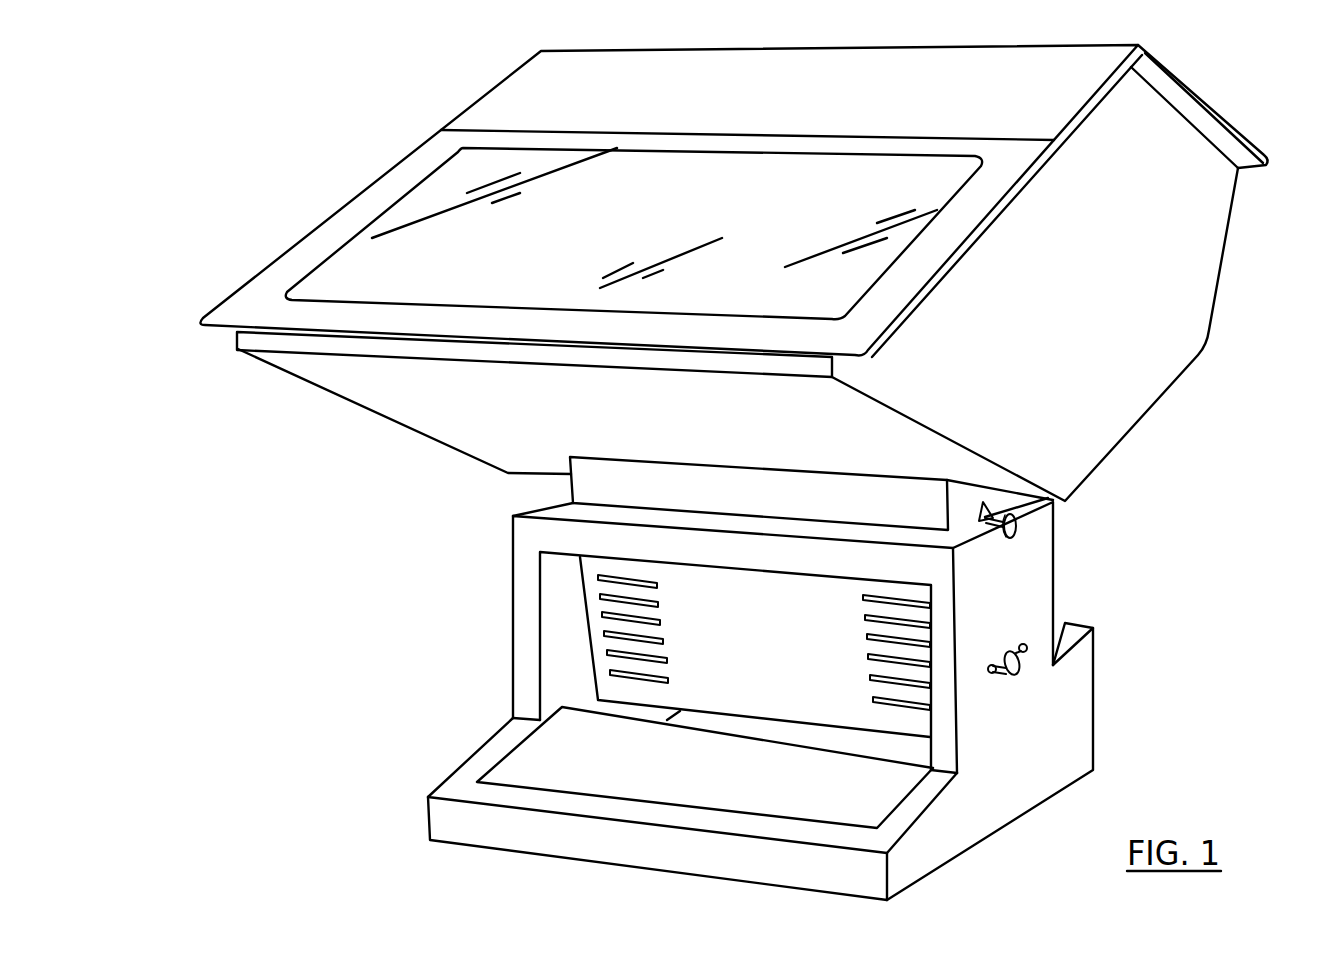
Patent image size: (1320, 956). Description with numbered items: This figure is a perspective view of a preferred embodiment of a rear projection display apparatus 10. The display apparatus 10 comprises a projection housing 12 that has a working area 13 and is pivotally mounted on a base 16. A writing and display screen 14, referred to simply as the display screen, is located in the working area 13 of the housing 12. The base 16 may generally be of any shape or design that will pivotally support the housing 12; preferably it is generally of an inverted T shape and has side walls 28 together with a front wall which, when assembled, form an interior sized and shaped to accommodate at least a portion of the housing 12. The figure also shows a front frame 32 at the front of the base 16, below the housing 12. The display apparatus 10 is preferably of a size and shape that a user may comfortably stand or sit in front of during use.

The display apparatus 10 is at (710, 472).
The projection housing 12 is at (406, 496).
The working area 13 is at (302, 152).
The writing and display screen 14 is at (661, 231).
The base 16 is at (1078, 705).
The side walls 28 is at (1021, 598).
The front frame 32 is at (573, 621).